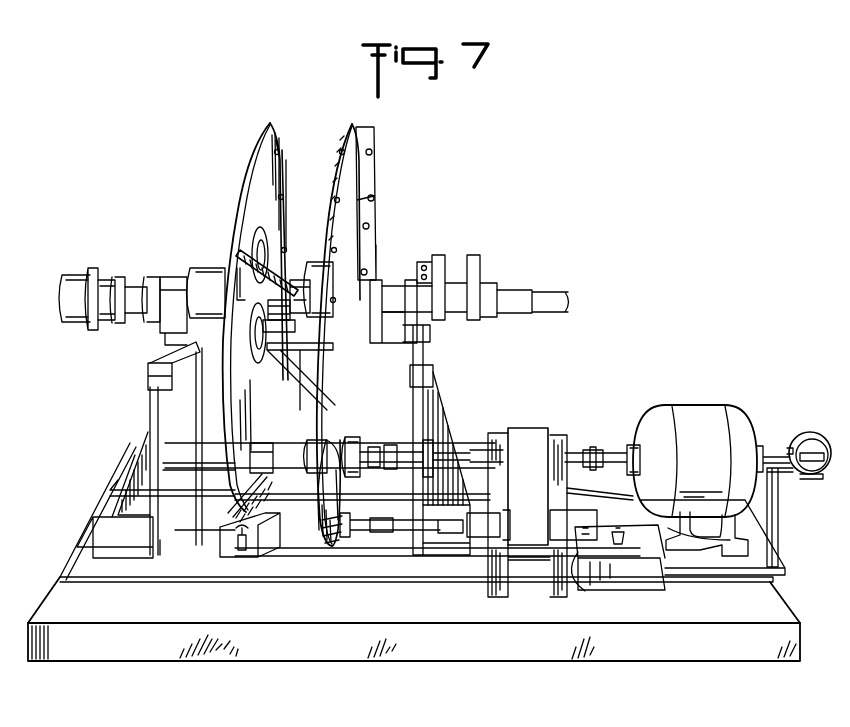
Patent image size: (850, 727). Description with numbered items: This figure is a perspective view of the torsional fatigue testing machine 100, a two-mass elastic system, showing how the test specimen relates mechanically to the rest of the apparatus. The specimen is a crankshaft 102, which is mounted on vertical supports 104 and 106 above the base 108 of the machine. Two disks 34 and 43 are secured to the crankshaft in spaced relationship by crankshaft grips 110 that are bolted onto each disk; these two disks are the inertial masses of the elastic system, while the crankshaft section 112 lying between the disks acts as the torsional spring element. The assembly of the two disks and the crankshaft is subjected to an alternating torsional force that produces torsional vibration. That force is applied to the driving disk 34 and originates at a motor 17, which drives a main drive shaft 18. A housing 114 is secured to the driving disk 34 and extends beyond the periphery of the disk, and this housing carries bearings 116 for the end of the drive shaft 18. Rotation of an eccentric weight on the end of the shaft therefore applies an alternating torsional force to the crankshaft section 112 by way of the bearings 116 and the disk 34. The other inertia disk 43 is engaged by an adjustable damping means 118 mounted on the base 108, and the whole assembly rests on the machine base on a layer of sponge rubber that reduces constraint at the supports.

The torsional fatigue testing machine 100 is at (563, 180).
The crankshaft 102 is at (80, 262).
The vertical support 104 is at (152, 396).
The disk 43 is at (272, 127).
The driving disk 34 is at (358, 127).
The crankshaft grips 110 is at (262, 262).
The crankshaft section 112 is at (287, 282).
The vertical support 106 is at (447, 392).
The main drive shaft 18 is at (568, 450).
The motor 17 is at (690, 403).
The bearings 116 is at (365, 446).
The housing 114 is at (318, 497).
The adjustable damping means 118 is at (257, 512).
The base 108 is at (268, 663).